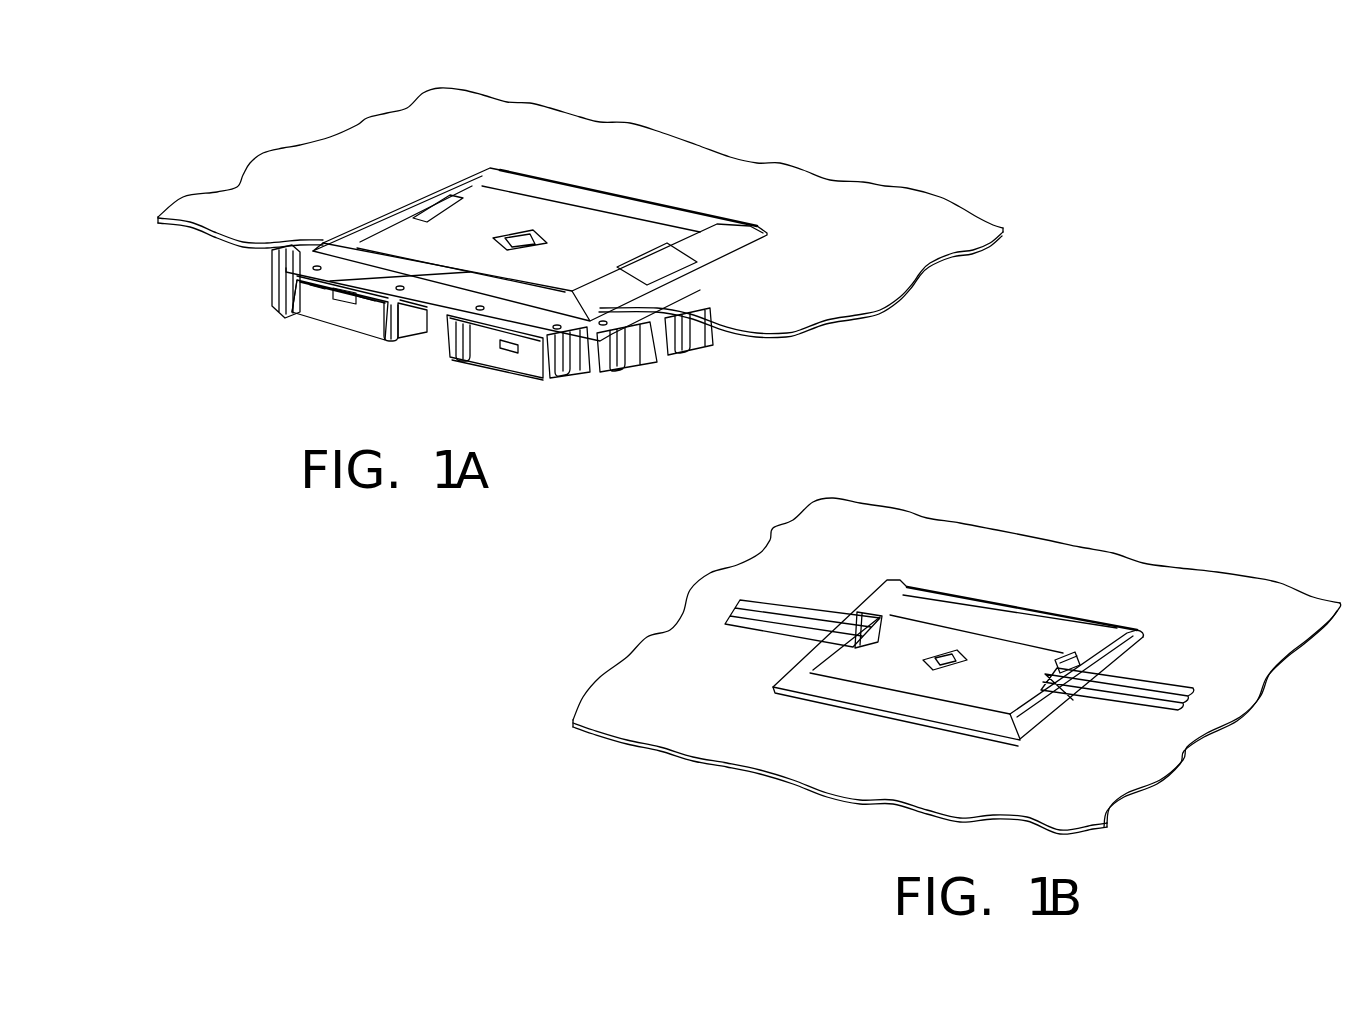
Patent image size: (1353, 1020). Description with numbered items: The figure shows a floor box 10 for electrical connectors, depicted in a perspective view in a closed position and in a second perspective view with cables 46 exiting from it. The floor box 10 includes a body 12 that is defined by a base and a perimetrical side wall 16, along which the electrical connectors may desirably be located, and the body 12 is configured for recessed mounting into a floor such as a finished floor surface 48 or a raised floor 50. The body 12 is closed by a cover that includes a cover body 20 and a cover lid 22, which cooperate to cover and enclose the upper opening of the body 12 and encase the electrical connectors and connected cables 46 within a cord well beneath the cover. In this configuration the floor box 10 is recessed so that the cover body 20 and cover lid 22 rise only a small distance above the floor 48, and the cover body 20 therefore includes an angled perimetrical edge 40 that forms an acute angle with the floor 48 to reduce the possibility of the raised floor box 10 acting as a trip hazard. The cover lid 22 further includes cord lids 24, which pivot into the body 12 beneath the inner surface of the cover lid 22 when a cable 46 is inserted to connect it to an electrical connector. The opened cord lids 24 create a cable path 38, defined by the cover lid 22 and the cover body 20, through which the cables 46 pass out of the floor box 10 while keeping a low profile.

In FIG. 1A, the floor box 10 is at (729, 126).
In FIG. 1B, the floor box 10 is at (1047, 518).
In FIG. 1A, the body 12 is at (317, 284).
In FIG. 1A, the perimetrical side wall 16 is at (510, 357).
In FIG. 1A, the cover body 20 is at (567, 200).
In FIG. 1B, the cover body 20 is at (948, 607).
In FIG. 1A, the cover lid 22 is at (473, 217).
In FIG. 1B, the cover lid 22 is at (893, 632).
In FIG. 1A, the cord lid 24 is at (670, 267).
In FIG. 1B, the cable path 38 is at (1063, 657).
In FIG. 1A, the angled perimetrical edge 40 is at (730, 238).
In FIG. 1B, the angled perimetrical edge 40 is at (1037, 723).
In FIG. 1B, the cables 46 is at (1153, 687).
In FIG. 1A, the floor 48 is at (303, 187).
In FIG. 1B, the floor 48 is at (1200, 600).
In FIG. 1A, the raised floor 50 is at (330, 330).